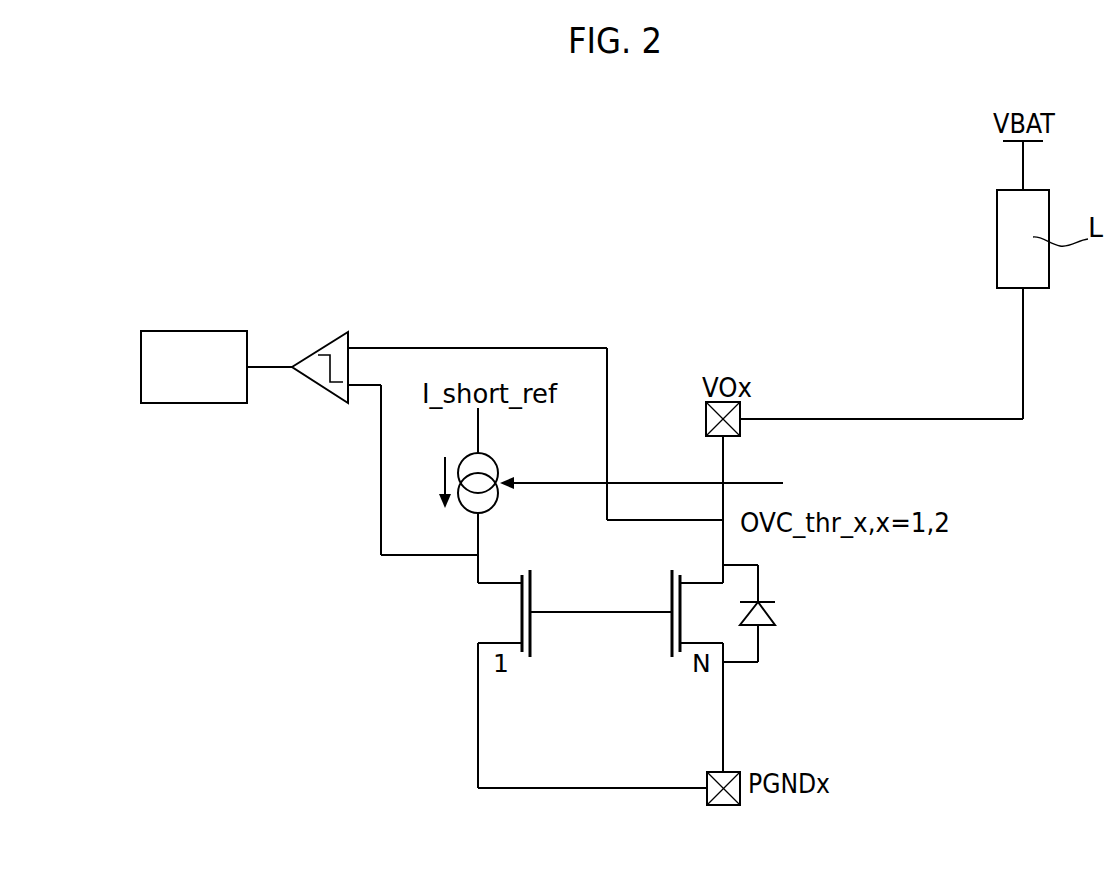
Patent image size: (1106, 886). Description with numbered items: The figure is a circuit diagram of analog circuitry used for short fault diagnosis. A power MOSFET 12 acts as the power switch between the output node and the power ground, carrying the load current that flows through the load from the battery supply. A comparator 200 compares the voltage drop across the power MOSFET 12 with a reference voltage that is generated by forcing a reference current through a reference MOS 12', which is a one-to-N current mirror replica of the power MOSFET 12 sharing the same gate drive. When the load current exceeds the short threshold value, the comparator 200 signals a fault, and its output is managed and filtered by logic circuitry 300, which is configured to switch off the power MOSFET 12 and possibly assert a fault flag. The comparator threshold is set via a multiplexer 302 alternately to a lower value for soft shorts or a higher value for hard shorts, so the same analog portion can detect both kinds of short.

The comparator 200 is at (327, 333).
The logic circuitry 300 is at (172, 398).
The multiplexer 302 is at (810, 482).
The power MOSFET 12 is at (770, 613).
The reference MOS 12' is at (455, 614).